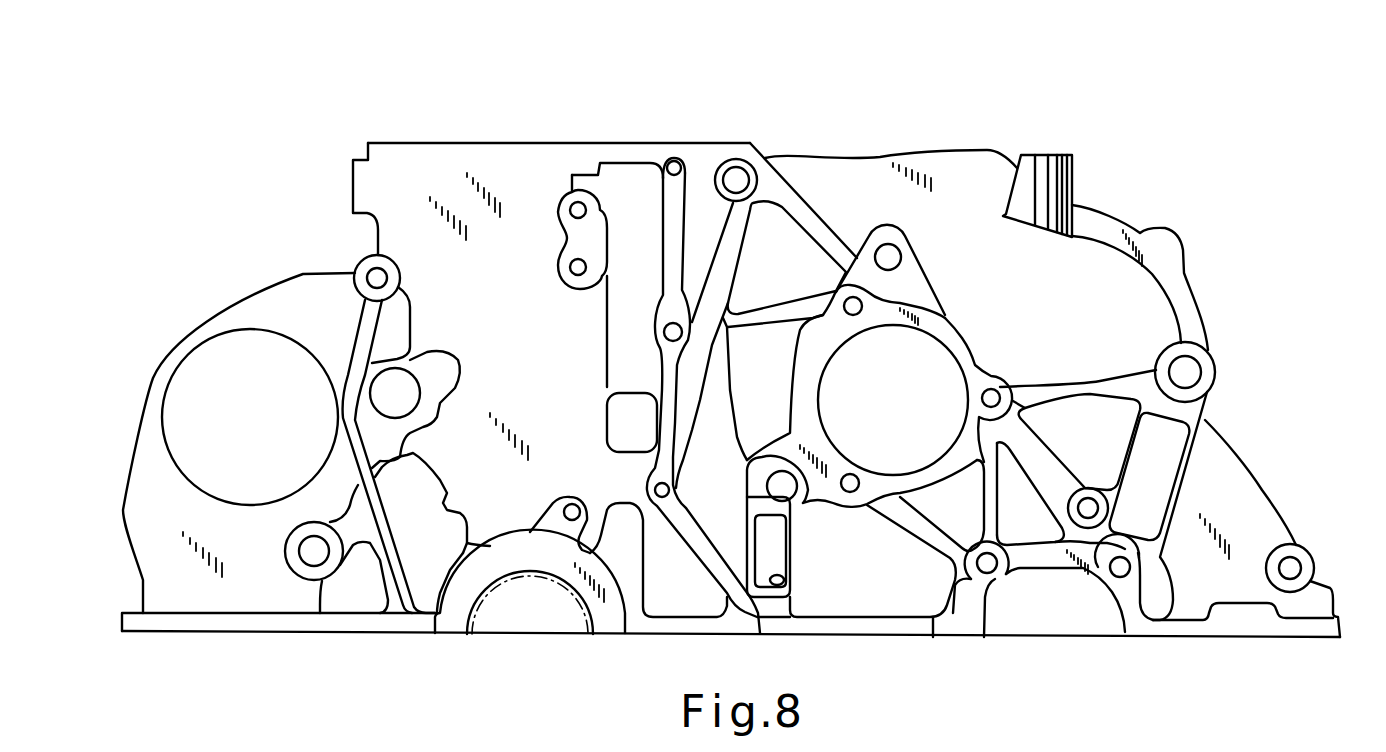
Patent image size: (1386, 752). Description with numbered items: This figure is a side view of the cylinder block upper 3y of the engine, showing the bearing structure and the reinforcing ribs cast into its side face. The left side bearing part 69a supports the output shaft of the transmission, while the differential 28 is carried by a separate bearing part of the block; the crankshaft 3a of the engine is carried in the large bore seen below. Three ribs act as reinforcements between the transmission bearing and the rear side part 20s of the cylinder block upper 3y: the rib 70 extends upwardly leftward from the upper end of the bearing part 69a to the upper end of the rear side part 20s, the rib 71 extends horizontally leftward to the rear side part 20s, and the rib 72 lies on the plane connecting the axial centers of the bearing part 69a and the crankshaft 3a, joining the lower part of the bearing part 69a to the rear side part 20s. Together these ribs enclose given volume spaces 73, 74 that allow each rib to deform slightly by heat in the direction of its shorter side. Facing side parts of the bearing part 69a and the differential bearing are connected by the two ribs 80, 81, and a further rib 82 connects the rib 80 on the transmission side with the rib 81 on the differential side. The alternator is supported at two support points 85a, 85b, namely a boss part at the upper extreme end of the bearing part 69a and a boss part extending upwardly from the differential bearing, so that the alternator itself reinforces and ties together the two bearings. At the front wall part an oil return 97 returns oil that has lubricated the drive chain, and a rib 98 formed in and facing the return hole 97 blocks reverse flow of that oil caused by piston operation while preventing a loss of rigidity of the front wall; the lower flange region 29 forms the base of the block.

The cylinder block upper 3y is at (813, 84).
The crankshaft 3a is at (518, 580).
The rear side part 20s is at (753, 371).
The differential 28 is at (1267, 507).
The lower flange 29 is at (1135, 630).
The left side bearing part 69a is at (965, 339).
The rib 70 is at (792, 203).
The rib 71 is at (775, 313).
The rib 72 is at (807, 500).
The space 73 is at (787, 268).
The space 74 is at (787, 424).
The rib 80 is at (1020, 436).
The rib 81 is at (927, 527).
The rib 82 is at (987, 504).
The support point 85a is at (917, 262).
The support point 85b is at (1215, 369).
The oil return 97 is at (783, 580).
The rib 98 is at (760, 548).